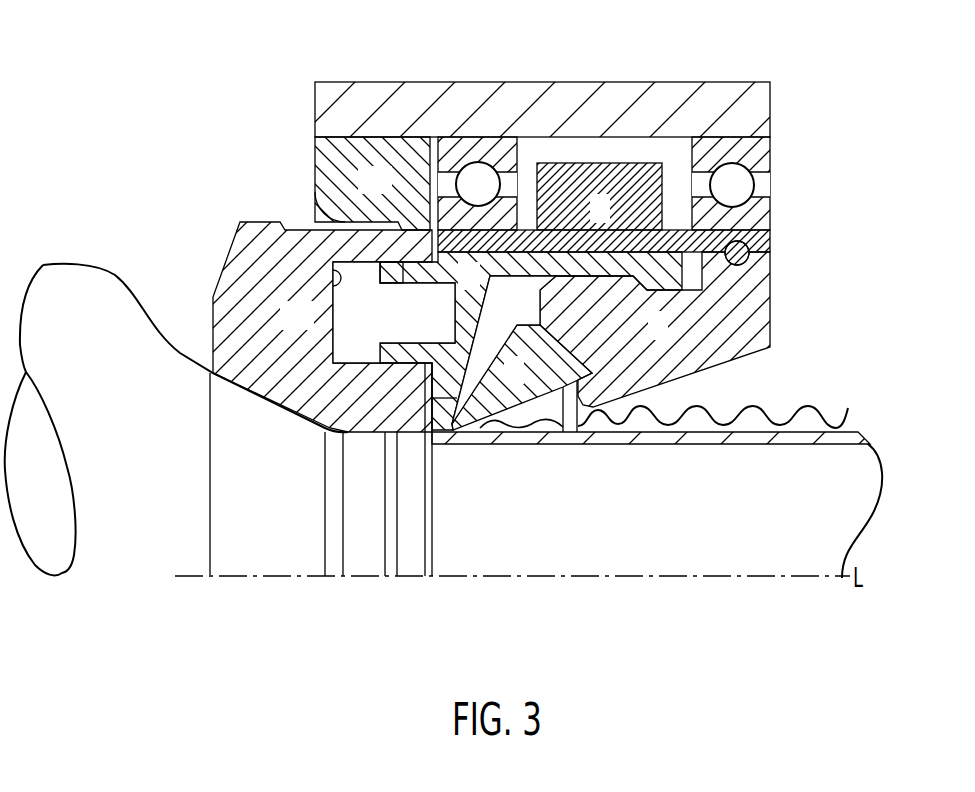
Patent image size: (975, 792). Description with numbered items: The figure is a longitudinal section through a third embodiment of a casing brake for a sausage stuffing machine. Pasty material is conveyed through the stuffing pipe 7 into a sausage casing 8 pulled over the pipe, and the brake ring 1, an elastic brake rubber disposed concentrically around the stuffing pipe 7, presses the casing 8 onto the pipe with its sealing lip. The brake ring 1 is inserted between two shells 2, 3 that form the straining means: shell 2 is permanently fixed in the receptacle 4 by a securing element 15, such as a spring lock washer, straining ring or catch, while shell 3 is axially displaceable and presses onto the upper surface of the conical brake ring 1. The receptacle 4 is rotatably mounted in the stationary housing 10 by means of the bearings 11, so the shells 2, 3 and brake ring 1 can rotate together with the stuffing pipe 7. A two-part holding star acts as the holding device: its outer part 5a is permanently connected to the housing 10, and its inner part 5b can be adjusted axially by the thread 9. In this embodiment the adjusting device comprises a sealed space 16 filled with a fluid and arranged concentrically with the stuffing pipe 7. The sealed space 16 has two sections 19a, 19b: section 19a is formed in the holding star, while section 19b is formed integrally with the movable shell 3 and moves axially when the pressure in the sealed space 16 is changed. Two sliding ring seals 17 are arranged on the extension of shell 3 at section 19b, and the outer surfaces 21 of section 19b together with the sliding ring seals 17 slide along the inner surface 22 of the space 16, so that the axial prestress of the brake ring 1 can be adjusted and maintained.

The brake ring 1 is at (522, 386).
The shell 2 is at (666, 338).
The shell 3 is at (477, 288).
The receptacle 4 is at (608, 221).
The outer part of the holding star 5a is at (389, 193).
The inner part of the holding star 5b is at (311, 328).
The stuffing pipe 7 is at (812, 550).
The sausage casing 8 is at (840, 430).
The thread 9 is at (313, 194).
The housing 10 is at (602, 103).
The bearings 11 is at (470, 152).
The securing element 15 is at (749, 258).
The sealed space 16 is at (361, 358).
The sliding ring seals 17 is at (388, 356).
The section of the sealed space 19a is at (379, 263).
The section of the sealed space 19b is at (476, 309).
The outer surfaces 21 is at (410, 366).
The inner surface 22 is at (343, 353).